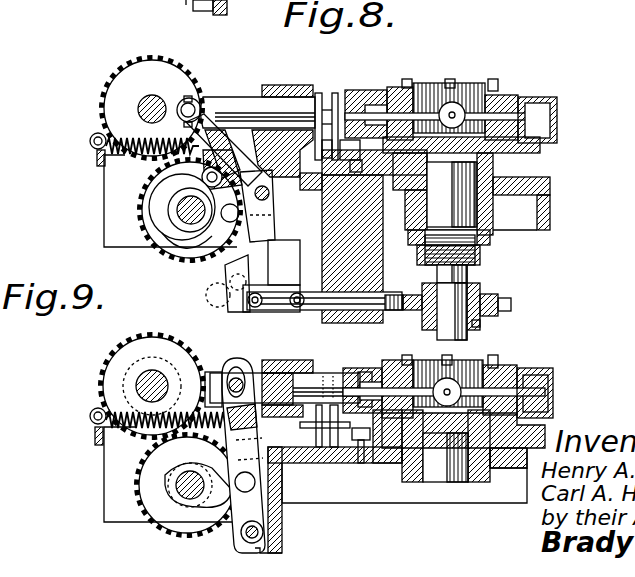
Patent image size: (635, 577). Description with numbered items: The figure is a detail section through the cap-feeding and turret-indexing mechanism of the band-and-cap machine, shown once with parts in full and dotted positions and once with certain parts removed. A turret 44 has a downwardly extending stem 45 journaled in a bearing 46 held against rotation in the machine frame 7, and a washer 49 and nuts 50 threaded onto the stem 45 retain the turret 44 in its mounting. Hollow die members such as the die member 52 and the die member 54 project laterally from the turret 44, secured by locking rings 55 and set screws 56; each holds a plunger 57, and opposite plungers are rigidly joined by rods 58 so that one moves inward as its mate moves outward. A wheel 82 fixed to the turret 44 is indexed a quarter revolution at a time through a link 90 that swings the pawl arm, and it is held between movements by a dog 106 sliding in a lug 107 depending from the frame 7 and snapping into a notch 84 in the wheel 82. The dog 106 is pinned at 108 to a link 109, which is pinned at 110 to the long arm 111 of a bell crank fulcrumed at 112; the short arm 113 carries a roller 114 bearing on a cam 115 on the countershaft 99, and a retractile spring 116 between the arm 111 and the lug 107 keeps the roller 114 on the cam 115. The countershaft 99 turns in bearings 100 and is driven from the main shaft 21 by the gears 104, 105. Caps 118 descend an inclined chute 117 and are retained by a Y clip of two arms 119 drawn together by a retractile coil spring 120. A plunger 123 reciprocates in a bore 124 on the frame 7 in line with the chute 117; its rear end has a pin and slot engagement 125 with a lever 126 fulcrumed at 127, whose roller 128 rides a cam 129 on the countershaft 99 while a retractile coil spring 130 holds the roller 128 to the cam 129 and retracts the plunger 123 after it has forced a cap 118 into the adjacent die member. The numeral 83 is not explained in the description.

In FIG. 8, the machine frame 7 is at (549, 191).
In FIG. 9, the machine frame 7 is at (525, 460).
In FIG. 8, the main shaft 21 is at (138, 108).
In FIG. 9, the main shaft 21 is at (138, 380).
In FIG. 8, the turret 44 is at (497, 90).
In FIG. 9, the turret 44 is at (500, 364).
In FIG. 8, the stem 45 is at (462, 210).
In FIG. 9, the stem 45 is at (442, 470).
In FIG. 8, the bearing 46 is at (487, 207).
In FIG. 9, the bearing 46 is at (491, 480).
In FIG. 8, the washer 49 is at (490, 238).
In FIG. 8, the nuts 50 is at (481, 255).
In FIG. 8, the die member 52 is at (362, 92).
In FIG. 8, the die member 54 is at (548, 99).
In FIG. 9, the die member 54 is at (553, 372).
In FIG. 8, the locking rings 55 is at (389, 96).
In FIG. 9, the locking rings 55 is at (517, 376).
In FIG. 8, the set screws 56 is at (450, 80).
In FIG. 8, the plunger 57 is at (350, 94).
In FIG. 9, the plunger 57 is at (571, 388).
In FIG. 8, the rods 58 is at (455, 110).
In FIG. 9, the rods 58 is at (478, 397).
In FIG. 8, the wheel 82 is at (512, 307).
In FIG. 8, the set screw 83 is at (481, 324).
In FIG. 8, the notch 84 is at (501, 300).
In FIG. 8, the link 90 is at (481, 293).
In FIG. 8, the countershaft 99 is at (180, 218).
In FIG. 9, the countershaft 99 is at (183, 488).
In FIG. 9, the bearings 100 is at (208, 512).
In FIG. 8, the gear 104 is at (124, 80).
In FIG. 9, the gear 104 is at (130, 360).
In FIG. 8, the gear 105 is at (152, 188).
In FIG. 9, the gear 105 is at (155, 470).
In FIG. 8, the dog 106 is at (352, 312).
In FIG. 8, the lug 107 is at (372, 248).
In FIG. 8, the pin 108 is at (300, 306).
In FIG. 8, the link 109 is at (280, 308).
In FIG. 8, the pin 110 is at (253, 305).
In FIG. 8, the long arm 111 is at (253, 275).
In FIG. 8, the fulcrum 112 is at (270, 198).
In FIG. 8, the short arm 113 is at (240, 176).
In FIG. 8, the roller 114 is at (160, 180).
In FIG. 8, the cam 115 is at (160, 213).
In FIG. 8, the retractile spring 116 is at (287, 262).
In FIG. 8, the chute 117 is at (320, 104).
In FIG. 9, the cap 118 is at (366, 373).
In FIG. 9, the arms 119 is at (326, 458).
In FIG. 8, the retractile coil spring 120 is at (346, 150).
In FIG. 8, the plunger 123 is at (236, 106).
In FIG. 9, the plunger 123 is at (328, 382).
In FIG. 8, the bore 124 is at (292, 87).
In FIG. 9, the bore 124 is at (290, 372).
In FIG. 8, the pin and slot engagement 125 is at (187, 104).
In FIG. 9, the pin and slot engagement 125 is at (238, 372).
In FIG. 8, the lever 126 is at (186, 136).
In FIG. 9, the lever 126 is at (250, 428).
In FIG. 9, the fulcrum 127 is at (262, 537).
In FIG. 9, the roller 128 is at (255, 506).
In FIG. 8, the cam 129 is at (195, 248).
In FIG. 9, the cam 129 is at (215, 490).
In FIG. 8, the retractile coil spring 130 is at (98, 134).
In FIG. 9, the retractile coil spring 130 is at (140, 412).